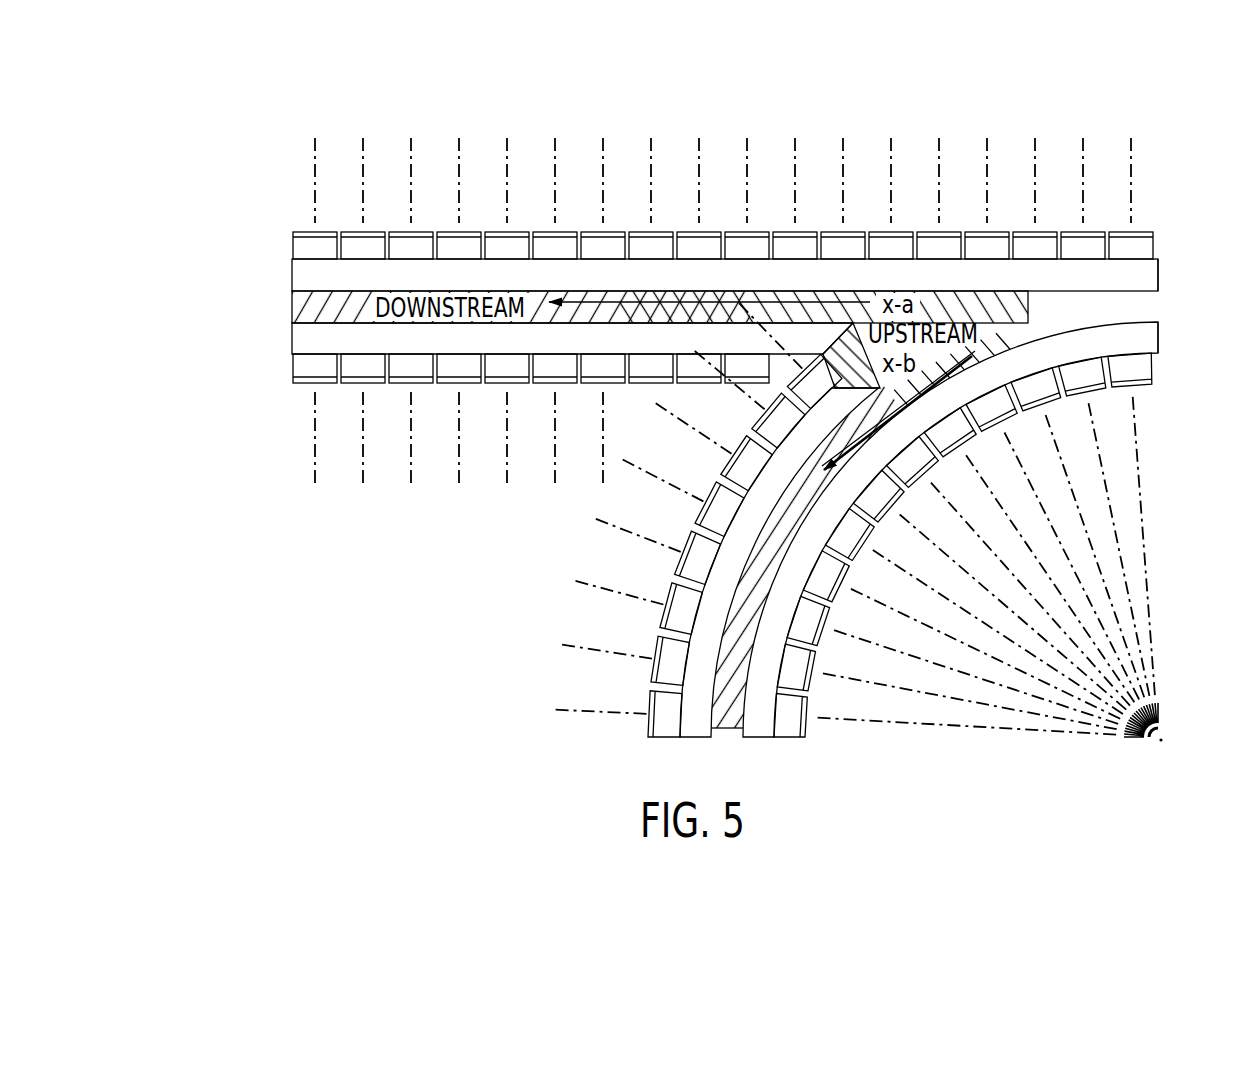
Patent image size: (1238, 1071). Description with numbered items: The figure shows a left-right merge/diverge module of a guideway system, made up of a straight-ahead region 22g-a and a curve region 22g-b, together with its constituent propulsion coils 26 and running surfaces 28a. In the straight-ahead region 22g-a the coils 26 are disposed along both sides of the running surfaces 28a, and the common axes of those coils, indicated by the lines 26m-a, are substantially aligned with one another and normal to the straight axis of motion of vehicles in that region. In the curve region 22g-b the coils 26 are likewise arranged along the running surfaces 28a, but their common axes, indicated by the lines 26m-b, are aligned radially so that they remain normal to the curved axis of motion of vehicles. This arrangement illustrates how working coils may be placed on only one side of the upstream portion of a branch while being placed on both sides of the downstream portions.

The straight-ahead region 22g-a is at (275, 178).
The curve region 22g-b is at (793, 726).
The propulsion coils 26 is at (327, 264).
The magnet group of straight segment 26m-a is at (1053, 117).
The magnet group of curved segment 26m-b is at (597, 507).
The running surfaces 28a is at (1157, 277).